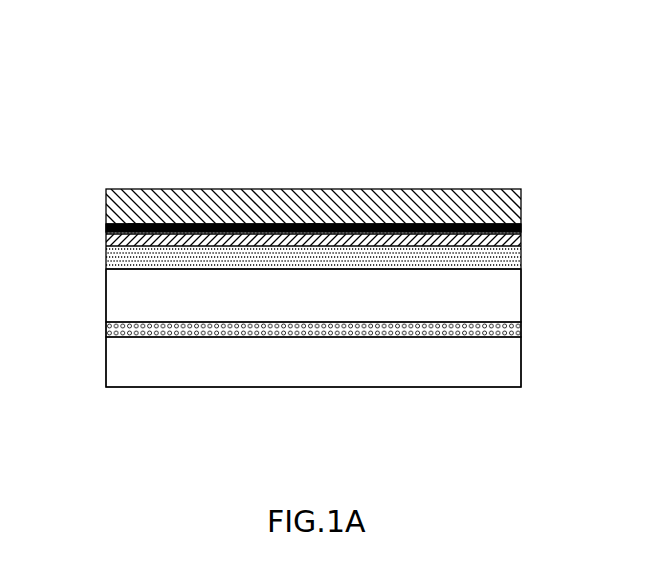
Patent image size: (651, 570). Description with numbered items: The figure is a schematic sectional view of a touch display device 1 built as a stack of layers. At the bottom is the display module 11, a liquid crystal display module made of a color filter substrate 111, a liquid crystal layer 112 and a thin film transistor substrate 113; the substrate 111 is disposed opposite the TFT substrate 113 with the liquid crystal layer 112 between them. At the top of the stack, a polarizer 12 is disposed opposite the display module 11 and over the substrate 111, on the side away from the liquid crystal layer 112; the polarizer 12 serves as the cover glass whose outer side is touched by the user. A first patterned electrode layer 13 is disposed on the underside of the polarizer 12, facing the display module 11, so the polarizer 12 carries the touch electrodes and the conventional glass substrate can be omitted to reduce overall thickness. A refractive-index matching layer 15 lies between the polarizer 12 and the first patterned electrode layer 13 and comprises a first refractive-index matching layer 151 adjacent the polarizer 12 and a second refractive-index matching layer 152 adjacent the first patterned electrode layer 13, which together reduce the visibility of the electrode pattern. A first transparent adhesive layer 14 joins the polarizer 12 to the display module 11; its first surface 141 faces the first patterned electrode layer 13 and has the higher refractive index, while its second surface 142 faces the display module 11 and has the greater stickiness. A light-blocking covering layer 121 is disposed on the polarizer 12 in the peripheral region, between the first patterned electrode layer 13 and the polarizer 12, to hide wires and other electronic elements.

The touch display device 1 is at (178, 66).
The display module 11 is at (55, 282).
The substrate 111 is at (113, 300).
The liquid crystal layer 112 is at (113, 331).
The thin film transistor substrate 113 is at (113, 368).
The polarizer 12 is at (514, 199).
The covering layer 121 is at (134, 223).
The first patterned electrode layer 13 is at (106, 240).
The first transparent adhesive layer 14 is at (577, 235).
The first surface 141 is at (516, 241).
The second surface 142 is at (514, 269).
The refractive-index matching layer 15 is at (397, 151).
The first refractive-index matching layer 151 is at (314, 223).
The second refractive-index matching layer 152 is at (386, 224).